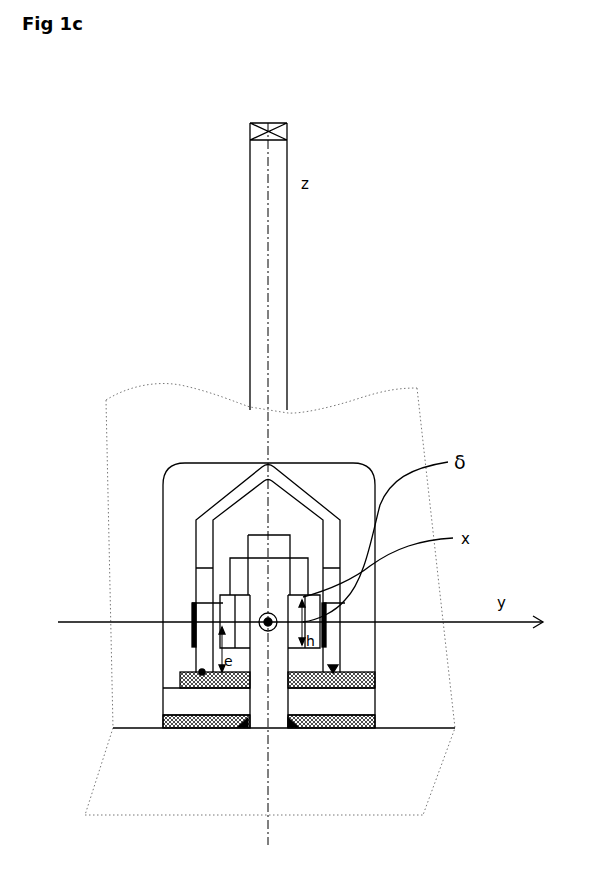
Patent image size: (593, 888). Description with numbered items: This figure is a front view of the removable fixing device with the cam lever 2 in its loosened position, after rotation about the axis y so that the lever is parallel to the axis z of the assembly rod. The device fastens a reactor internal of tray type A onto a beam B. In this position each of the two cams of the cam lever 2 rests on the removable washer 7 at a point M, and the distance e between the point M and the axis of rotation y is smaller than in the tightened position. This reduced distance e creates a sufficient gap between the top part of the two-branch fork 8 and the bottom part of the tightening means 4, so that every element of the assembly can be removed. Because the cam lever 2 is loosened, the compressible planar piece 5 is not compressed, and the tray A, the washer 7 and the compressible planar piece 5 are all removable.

The cam lever 2 is at (262, 158).
The tightening means 4 is at (217, 567).
The two-branch fork 8 is at (223, 607).
The optional washer 7 is at (352, 681).
The compressible planar piece 5 is at (352, 722).
The contact point M is at (202, 672).
The reactor internal of tray type A is at (363, 702).
The beam B is at (353, 768).